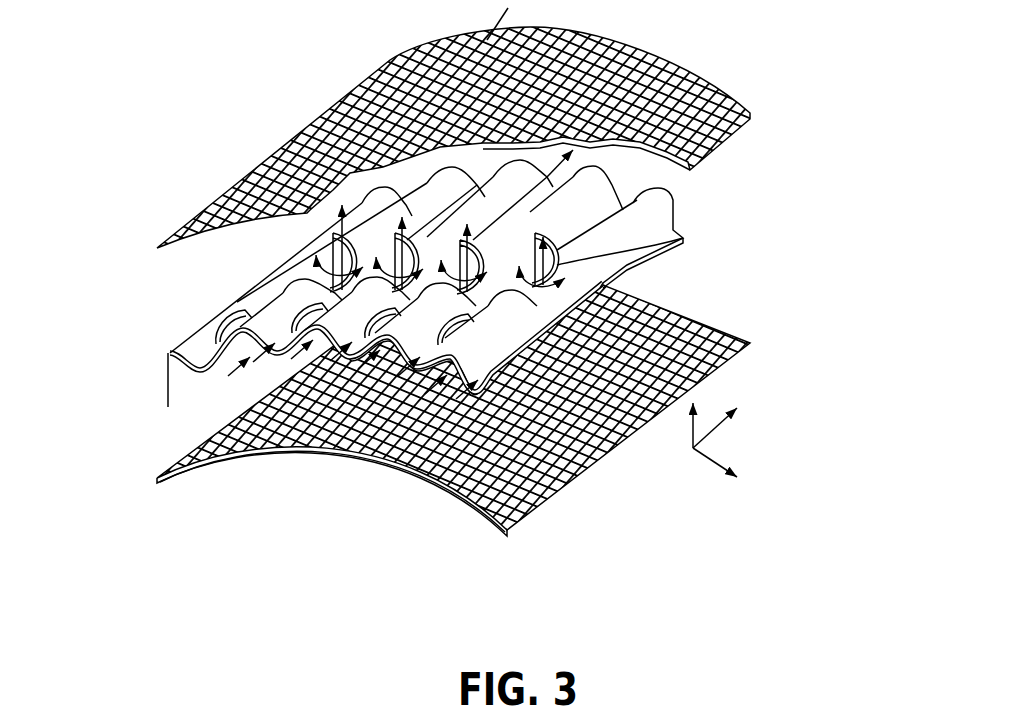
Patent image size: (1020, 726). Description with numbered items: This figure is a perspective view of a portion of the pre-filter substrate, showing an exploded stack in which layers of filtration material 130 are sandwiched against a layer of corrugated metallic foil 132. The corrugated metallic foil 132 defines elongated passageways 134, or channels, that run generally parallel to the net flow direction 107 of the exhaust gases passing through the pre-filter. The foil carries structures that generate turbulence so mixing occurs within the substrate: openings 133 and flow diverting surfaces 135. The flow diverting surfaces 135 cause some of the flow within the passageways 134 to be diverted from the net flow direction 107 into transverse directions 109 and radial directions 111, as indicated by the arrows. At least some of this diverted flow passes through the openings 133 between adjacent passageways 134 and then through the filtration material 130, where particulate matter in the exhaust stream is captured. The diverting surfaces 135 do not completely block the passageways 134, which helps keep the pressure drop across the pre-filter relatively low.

The net flow direction 107 is at (547, 177).
The transverse directions 109 is at (696, 450).
The radial directions 111 is at (690, 437).
The filtration materials 130 is at (743, 112).
The corrugated metallic foil 132 is at (170, 353).
The openings 133 is at (617, 268).
The elongated passageways 134 is at (257, 350).
The flow diverting surfaces 135 is at (333, 445).